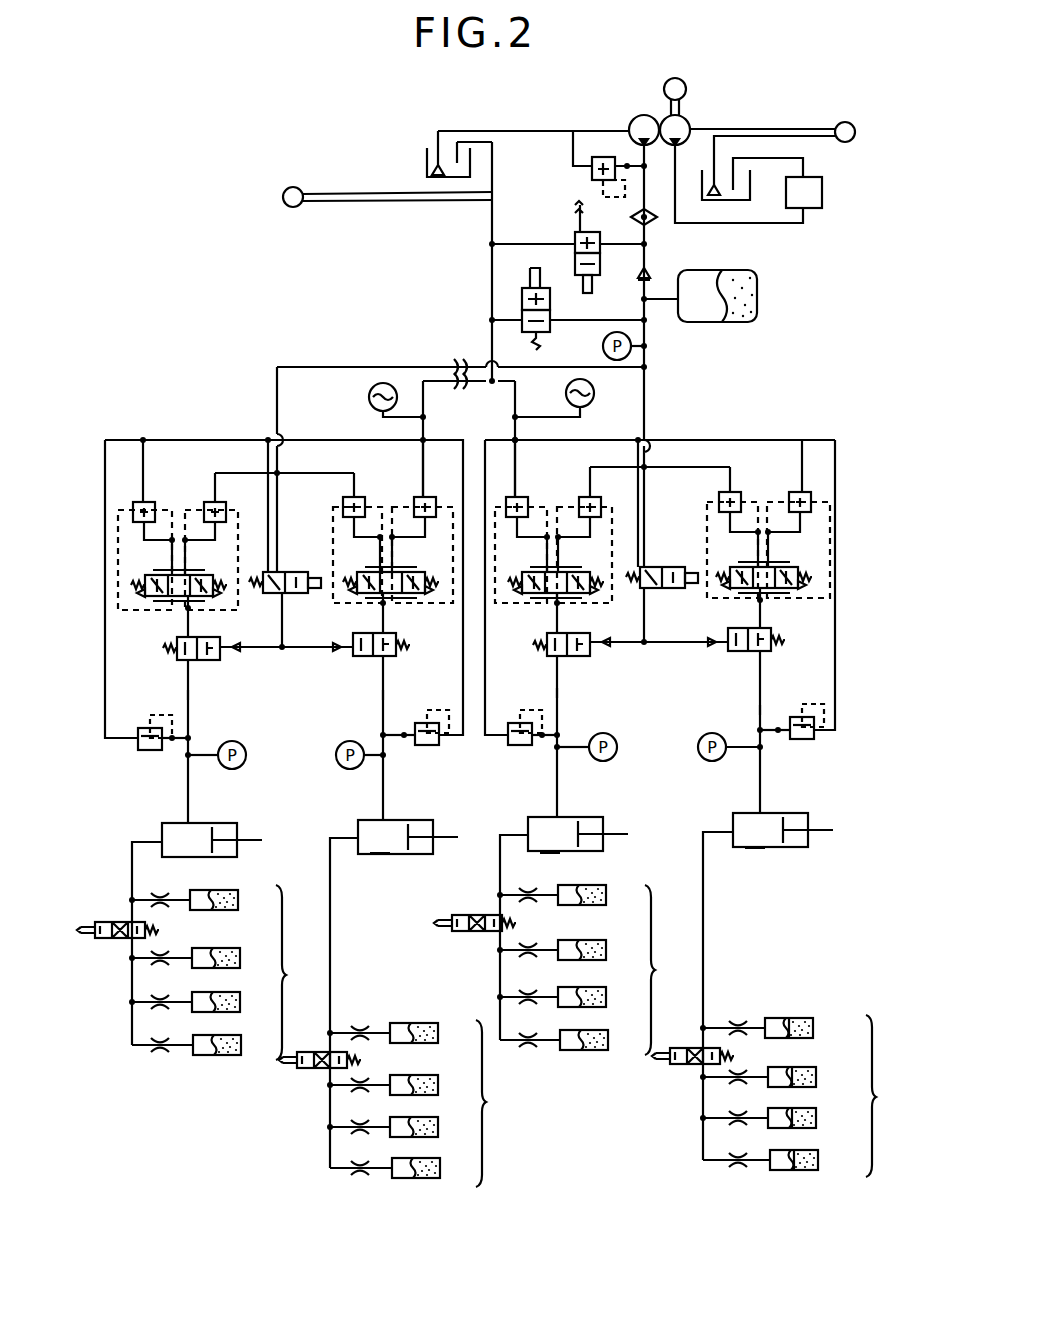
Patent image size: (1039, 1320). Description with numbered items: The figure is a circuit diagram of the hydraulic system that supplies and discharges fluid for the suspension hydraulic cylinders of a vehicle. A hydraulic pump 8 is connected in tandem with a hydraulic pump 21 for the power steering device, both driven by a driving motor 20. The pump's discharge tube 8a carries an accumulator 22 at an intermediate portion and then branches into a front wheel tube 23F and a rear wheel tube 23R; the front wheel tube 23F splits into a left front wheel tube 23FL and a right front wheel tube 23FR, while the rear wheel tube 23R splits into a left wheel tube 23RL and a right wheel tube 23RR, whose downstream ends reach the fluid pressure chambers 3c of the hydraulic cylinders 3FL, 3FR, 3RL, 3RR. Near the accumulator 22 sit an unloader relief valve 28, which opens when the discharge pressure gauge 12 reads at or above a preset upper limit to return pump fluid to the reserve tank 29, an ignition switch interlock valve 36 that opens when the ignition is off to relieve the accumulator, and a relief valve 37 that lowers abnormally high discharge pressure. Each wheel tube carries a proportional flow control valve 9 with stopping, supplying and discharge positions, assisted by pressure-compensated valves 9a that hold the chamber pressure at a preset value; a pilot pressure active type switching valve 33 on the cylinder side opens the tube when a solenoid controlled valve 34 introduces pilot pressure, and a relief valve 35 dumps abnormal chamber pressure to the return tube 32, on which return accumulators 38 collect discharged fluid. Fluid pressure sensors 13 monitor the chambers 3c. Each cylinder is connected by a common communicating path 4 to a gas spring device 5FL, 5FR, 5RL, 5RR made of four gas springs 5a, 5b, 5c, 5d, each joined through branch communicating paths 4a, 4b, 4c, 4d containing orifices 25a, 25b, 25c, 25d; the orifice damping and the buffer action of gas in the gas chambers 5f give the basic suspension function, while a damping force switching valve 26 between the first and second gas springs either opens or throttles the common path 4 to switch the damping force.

The hydraulic cylinder 3RR is at (238, 828).
The hydraulic cylinder 3RL is at (437, 822).
The hydraulic cylinder 3FR is at (608, 822).
The hydraulic cylinder 3FL is at (813, 820).
The fluid pressure chamber 3c is at (200, 857).
The common communicating path 4 is at (125, 852).
The branch communicating path 4a is at (703, 1030).
The branch communicating path 4b is at (703, 1078).
The branch communicating path 4c is at (703, 1119).
The branch communicating path 4d is at (705, 1162).
The gas spring 5a is at (238, 900).
The gas spring 5b is at (240, 958).
The gas spring 5c is at (240, 1002).
The gas spring 5d is at (241, 1045).
The gas chamber 5f is at (794, 1030).
The gas spring device 5RR is at (304, 972).
The gas spring device 5RL is at (507, 1103).
The gas spring device 5FR is at (671, 970).
The gas spring device 5FL is at (896, 1096).
The hydraulic pump 8 is at (630, 124).
The discharge tube 8a is at (648, 335).
The proportional flow control valve 9 is at (223, 601).
The pressure-compensated valve 9a is at (156, 494).
The discharge pressure gauge 12 is at (603, 346).
The fluid pressure sensor 13 is at (246, 755).
The driving motor 20 is at (686, 89).
The hydraulic pump 21 is at (690, 126).
The accumulator 22 is at (752, 270).
The rear wheel tube 23R is at (296, 359).
The front wheel tube 23F is at (665, 412).
The right wheel tube 23RR is at (188, 695).
The left wheel tube 23RL is at (383, 693).
The right front wheel tube 23FR is at (558, 692).
The left front wheel tube 23FL is at (760, 710).
The orifice 25a is at (160, 895).
The orifice 25b is at (160, 955).
The orifice 25c is at (160, 997).
The orifice 25d is at (160, 1053).
The damping force switching valve 26 is at (93, 913).
The unloader relief valve 28 is at (575, 239).
The reserve tank 29 is at (427, 162).
The return tube 32 is at (490, 246).
The switching valve 33 is at (178, 660).
The solenoid controlled valve 34 is at (300, 595).
The relief valve 35 is at (152, 750).
The ignition switch interlock valve 36 is at (522, 300).
The relief valve 37 is at (592, 172).
The return accumulator 38 is at (369, 397).